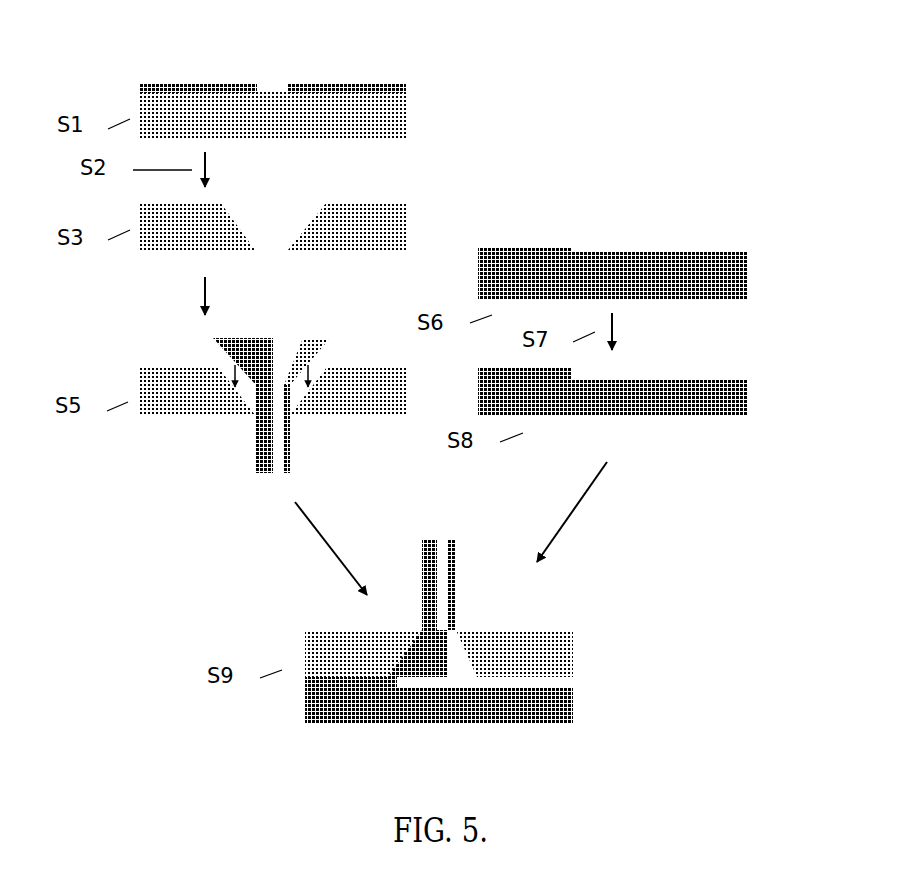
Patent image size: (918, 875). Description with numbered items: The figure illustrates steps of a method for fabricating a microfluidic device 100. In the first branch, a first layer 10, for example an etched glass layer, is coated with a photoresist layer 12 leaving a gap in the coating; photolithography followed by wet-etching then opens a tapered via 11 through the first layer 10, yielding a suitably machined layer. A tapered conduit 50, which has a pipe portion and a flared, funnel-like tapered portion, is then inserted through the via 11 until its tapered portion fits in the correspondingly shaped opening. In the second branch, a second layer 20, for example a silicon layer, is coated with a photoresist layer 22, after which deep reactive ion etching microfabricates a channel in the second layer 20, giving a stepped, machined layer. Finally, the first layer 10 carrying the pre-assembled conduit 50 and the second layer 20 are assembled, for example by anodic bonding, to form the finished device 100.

The first layer 10 is at (402, 118).
The via 11 is at (310, 227).
The photoresist layer 12 is at (406, 88).
The second layer 20 is at (635, 262).
The photoresist layer 22 is at (535, 247).
The tapered conduit 50 is at (297, 342).
The device 100 is at (612, 673).